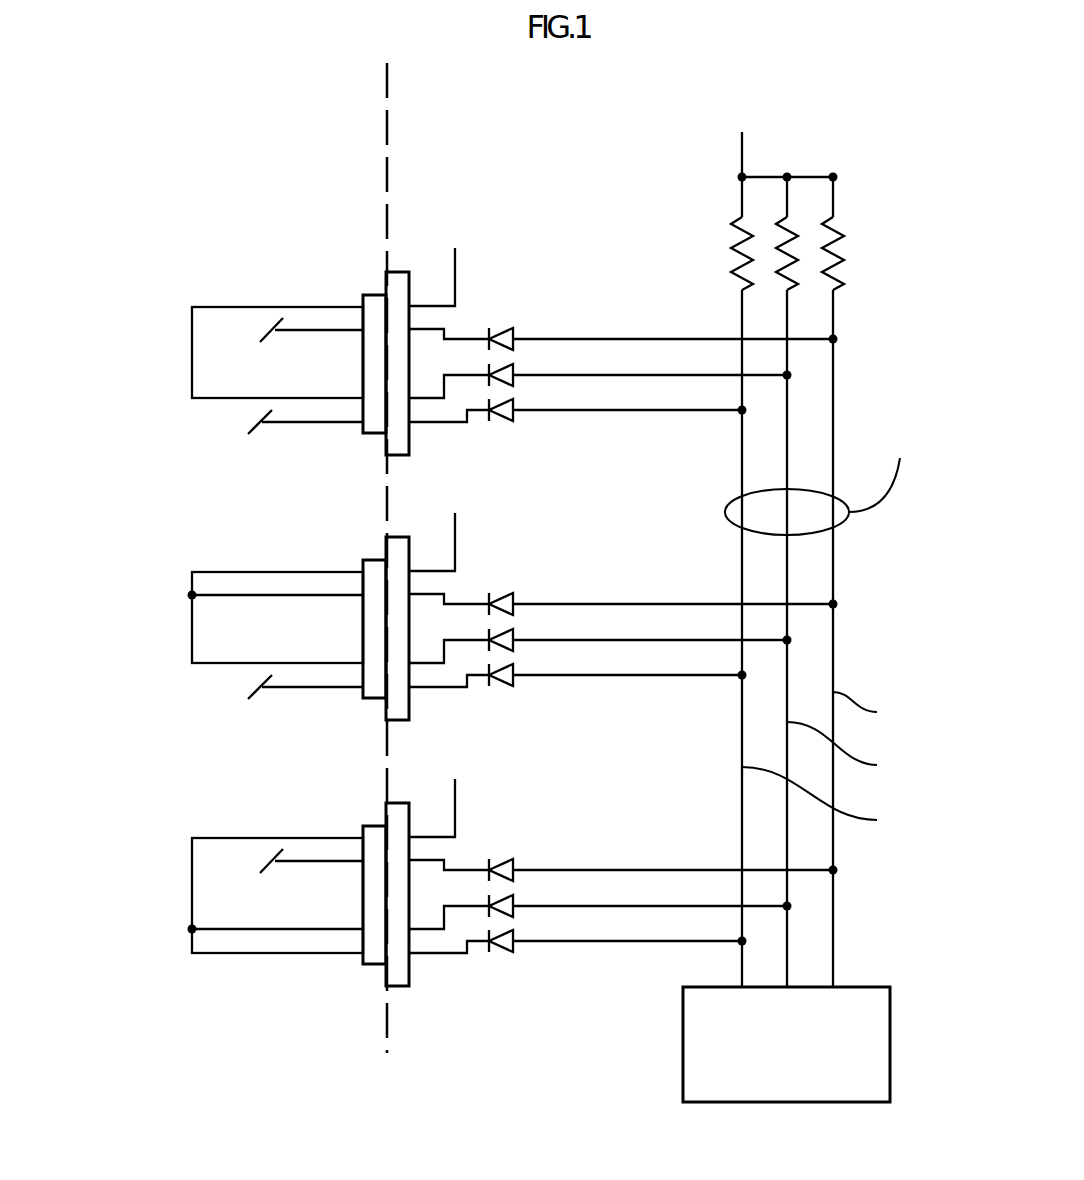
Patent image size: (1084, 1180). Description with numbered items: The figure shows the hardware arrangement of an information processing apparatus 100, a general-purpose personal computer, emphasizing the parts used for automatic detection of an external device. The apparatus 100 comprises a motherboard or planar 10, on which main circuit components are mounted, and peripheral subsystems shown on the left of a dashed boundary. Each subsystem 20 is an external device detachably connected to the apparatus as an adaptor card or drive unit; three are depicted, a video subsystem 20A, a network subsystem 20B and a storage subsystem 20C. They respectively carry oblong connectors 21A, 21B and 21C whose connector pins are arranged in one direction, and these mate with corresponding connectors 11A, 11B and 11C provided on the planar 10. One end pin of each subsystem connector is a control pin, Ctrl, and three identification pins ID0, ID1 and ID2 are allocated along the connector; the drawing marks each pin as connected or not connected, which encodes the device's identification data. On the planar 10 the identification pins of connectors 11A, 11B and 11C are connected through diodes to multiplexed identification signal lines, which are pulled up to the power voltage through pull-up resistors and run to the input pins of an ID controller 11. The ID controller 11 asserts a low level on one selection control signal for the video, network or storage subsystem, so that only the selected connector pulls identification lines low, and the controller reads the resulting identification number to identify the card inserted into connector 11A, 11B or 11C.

The information processing apparatus 100 is at (294, 1040).
The planar 10 is at (480, 155).
The ID controller 11 is at (683, 1045).
The connector 11A is at (398, 452).
The connector 11B is at (418, 646).
The connector 11C is at (418, 915).
The subsystem 20 is at (260, 155).
The video subsystem 20A is at (223, 366).
The network subsystem 20B is at (223, 631).
The storage subsystem 20C is at (220, 888).
The connector 21A is at (377, 428).
The connector 21B is at (361, 661).
The connector 21C is at (354, 926).